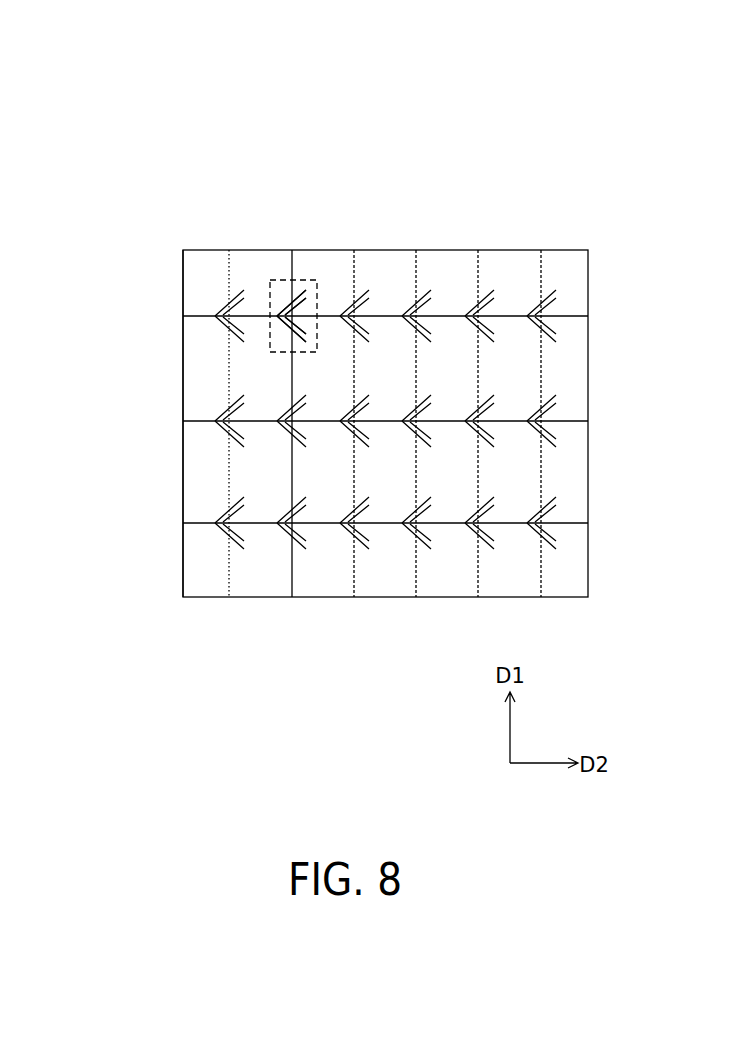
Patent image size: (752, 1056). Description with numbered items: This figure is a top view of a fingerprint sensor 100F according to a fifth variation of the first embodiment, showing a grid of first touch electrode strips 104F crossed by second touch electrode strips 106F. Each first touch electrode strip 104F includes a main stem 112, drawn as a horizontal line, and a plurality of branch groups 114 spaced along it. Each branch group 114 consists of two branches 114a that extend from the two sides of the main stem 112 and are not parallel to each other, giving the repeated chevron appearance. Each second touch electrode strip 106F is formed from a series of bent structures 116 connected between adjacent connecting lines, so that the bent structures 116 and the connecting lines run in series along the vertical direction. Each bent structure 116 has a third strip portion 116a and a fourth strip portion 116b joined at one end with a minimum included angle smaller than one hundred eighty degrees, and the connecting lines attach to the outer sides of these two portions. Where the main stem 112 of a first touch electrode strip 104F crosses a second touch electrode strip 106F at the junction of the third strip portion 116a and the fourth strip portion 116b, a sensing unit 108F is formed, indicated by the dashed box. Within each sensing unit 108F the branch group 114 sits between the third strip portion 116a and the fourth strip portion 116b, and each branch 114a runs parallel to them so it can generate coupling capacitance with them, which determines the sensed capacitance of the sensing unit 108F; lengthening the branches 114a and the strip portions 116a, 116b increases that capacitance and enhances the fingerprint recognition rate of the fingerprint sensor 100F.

The fingerprint sensor 100F is at (560, 88).
The first touch electrode strip 104F is at (158, 320).
The second touch electrode strip 106F is at (542, 262).
The sensing unit 108F is at (303, 280).
The main stem 112 is at (198, 316).
The branch group 114 is at (490, 183).
The branch 114a is at (316, 304).
The bent structure 116 is at (302, 210).
The third strip portion 116a is at (297, 313).
The fourth strip portion 116b is at (280, 324).